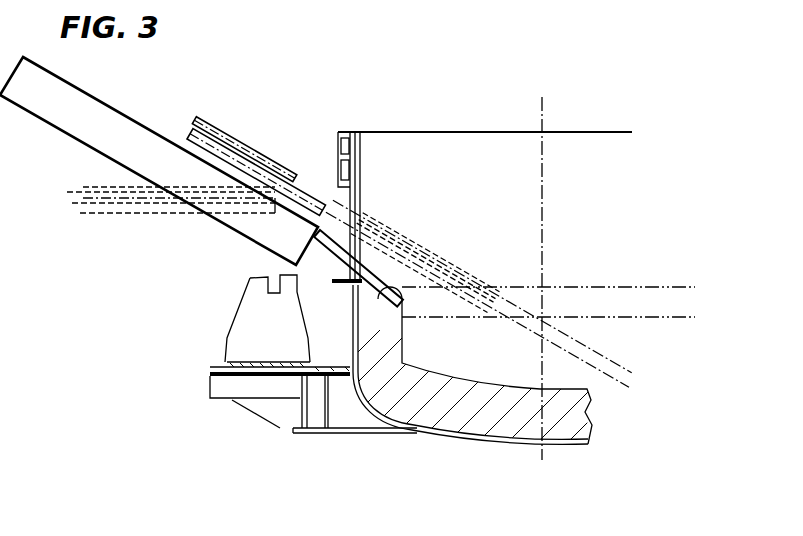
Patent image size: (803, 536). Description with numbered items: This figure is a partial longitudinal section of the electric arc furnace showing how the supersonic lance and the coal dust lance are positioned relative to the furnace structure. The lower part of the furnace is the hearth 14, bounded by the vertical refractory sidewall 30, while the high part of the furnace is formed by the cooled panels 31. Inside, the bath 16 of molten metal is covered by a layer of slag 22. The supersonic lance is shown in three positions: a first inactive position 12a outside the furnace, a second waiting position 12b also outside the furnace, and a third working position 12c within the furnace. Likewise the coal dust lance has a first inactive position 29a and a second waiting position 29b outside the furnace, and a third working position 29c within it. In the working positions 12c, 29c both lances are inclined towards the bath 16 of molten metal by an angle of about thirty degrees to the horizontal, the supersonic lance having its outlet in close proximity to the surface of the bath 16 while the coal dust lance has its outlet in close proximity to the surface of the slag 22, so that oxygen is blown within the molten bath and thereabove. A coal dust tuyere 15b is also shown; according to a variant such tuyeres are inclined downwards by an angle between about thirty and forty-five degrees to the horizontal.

The first inactive position of supersonic lance 12a is at (118, 213).
The second waiting position of supersonic lance 12b is at (196, 117).
The third working position of supersonic lance 12c is at (481, 298).
The hearth 14 is at (497, 412).
The coal dust tuyere 15b is at (300, 250).
The bath of molten metal 16 is at (633, 317).
The slag 22 is at (633, 287).
The first inactive position of coal dust lance 29a is at (99, 189).
The second waiting position of coal dust lance 29b is at (252, 144).
The third working position of coal dust lance 29c is at (416, 250).
The vertical refractory sidewall 30 is at (372, 363).
The cooled panels 31 is at (358, 149).